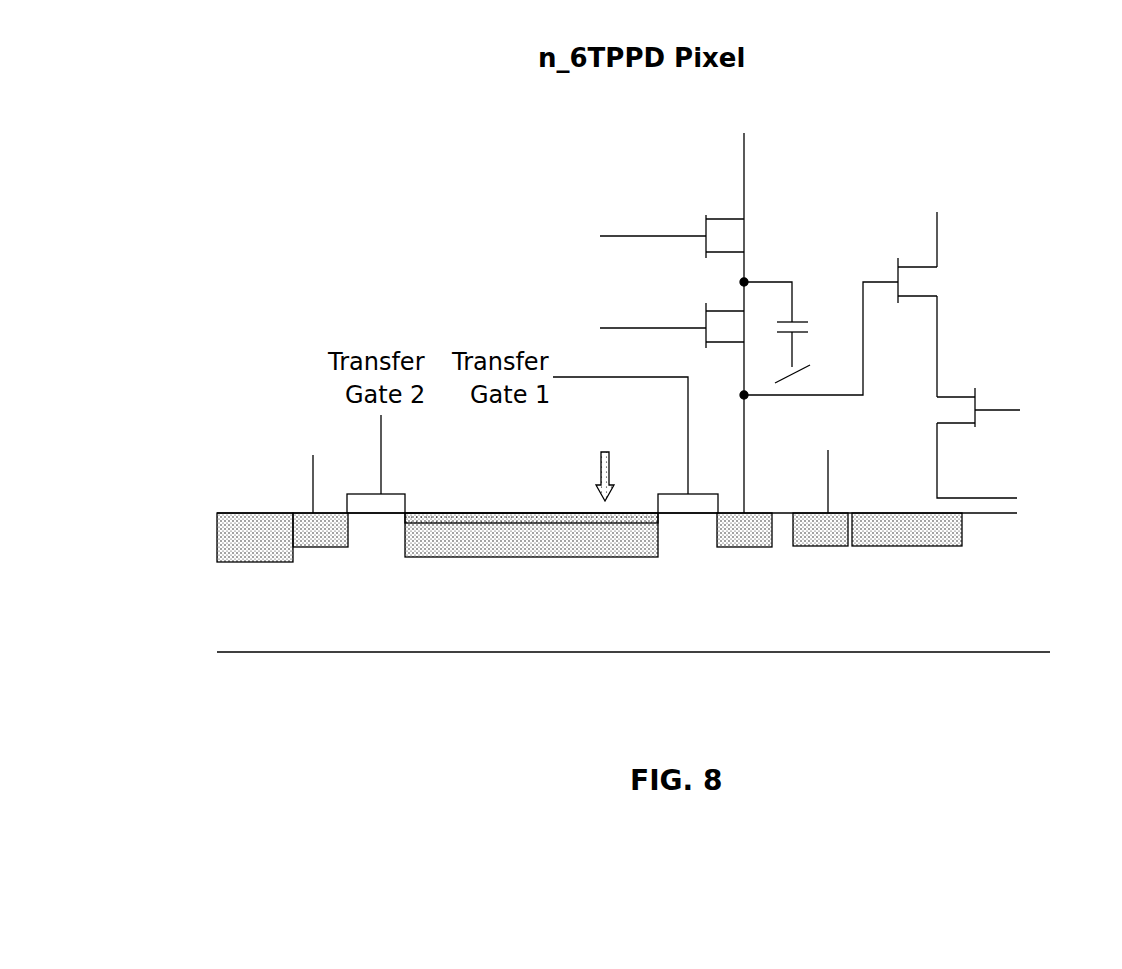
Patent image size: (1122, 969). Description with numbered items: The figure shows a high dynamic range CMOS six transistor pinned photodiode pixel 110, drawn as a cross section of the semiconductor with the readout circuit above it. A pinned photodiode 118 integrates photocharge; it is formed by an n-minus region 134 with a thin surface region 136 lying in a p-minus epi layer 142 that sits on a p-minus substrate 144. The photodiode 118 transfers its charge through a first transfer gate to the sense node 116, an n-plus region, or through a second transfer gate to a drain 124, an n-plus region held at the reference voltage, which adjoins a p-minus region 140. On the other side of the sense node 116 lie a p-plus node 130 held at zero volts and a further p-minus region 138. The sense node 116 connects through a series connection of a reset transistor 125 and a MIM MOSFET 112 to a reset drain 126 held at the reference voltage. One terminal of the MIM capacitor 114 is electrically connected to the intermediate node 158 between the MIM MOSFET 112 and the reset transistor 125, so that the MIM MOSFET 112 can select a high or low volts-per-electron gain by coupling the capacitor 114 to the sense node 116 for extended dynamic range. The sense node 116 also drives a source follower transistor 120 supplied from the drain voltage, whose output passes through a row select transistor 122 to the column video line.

The six transistor pinned photodiode pixel 110 is at (360, 90).
The MIM MOSFET 112 is at (706, 311).
The MIM capacitor 114 is at (792, 282).
The sense node 116 is at (758, 513).
The pinned photodiode 118 is at (535, 572).
The source follower transistor 120 is at (1105, 293).
The row select transistor 122 is at (1113, 395).
The drain 124 is at (302, 513).
The reset transistor 125 is at (725, 219).
The reset drain 126 is at (744, 140).
The node 130 is at (840, 513).
The region 134 is at (578, 545).
The region 136 is at (510, 513).
The region 138 is at (918, 546).
The region 140 is at (255, 562).
The epi layer 142 is at (393, 625).
The substrate 144 is at (686, 695).
The intermediate node 158 is at (744, 281).